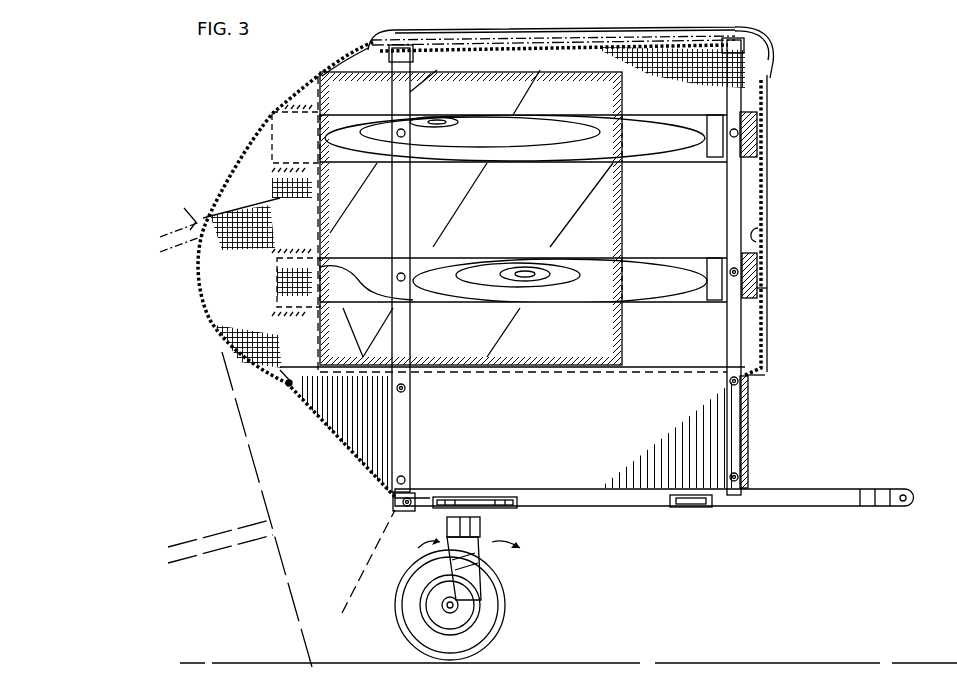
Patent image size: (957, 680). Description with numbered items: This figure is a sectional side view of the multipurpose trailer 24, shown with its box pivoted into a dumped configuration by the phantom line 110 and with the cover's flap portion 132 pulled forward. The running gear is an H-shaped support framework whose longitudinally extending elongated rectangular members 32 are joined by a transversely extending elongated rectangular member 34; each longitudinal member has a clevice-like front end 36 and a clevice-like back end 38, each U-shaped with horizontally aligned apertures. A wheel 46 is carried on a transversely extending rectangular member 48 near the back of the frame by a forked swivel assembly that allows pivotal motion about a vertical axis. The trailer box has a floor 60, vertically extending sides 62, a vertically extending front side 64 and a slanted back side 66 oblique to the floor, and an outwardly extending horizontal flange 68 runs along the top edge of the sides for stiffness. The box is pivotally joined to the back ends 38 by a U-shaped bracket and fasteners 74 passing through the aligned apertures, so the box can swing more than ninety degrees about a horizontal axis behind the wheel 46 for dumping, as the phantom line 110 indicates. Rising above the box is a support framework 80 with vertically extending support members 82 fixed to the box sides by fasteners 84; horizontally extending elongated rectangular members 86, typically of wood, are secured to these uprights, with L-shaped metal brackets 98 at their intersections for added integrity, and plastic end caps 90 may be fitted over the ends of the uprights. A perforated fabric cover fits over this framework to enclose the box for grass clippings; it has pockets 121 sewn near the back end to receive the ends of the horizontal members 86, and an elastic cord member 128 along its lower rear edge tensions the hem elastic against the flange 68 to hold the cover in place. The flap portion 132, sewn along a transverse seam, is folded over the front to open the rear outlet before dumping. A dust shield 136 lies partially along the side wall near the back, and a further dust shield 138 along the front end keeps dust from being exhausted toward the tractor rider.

The multipurpose trailer 24 is at (770, 204).
The longitudinally extending elongated rectangular member 32 is at (818, 490).
The transversely extending elongated rectangular member 34 is at (691, 504).
The clevice-like front end 36 is at (896, 489).
The clevice-like back end 38 is at (392, 503).
The wheel 46 is at (398, 622).
The transversely extending rectangular member 48 is at (511, 502).
The floor 60 is at (645, 490).
The vertically extending side 62 is at (591, 468).
The vertically extending front side 64 is at (748, 456).
The slanted back side 66 is at (356, 440).
The horizontal flange 68 is at (286, 381).
The fastener 74 is at (403, 513).
The support framework 80 is at (768, 290).
The vertically extending support member 82 is at (734, 214).
The fastener 84 is at (410, 390).
The horizontally extending elongated rectangular member 86 is at (534, 151).
The plastic end cap 90 is at (738, 40).
The L-shaped metal bracket 98 is at (711, 152).
The phantom line 110 is at (289, 589).
The pocket 121 is at (275, 129).
The elastic cord member 128 is at (289, 386).
The flap portion 132 is at (566, 36).
The dust shield 136 is at (457, 88).
The dust shield 138 is at (758, 240).